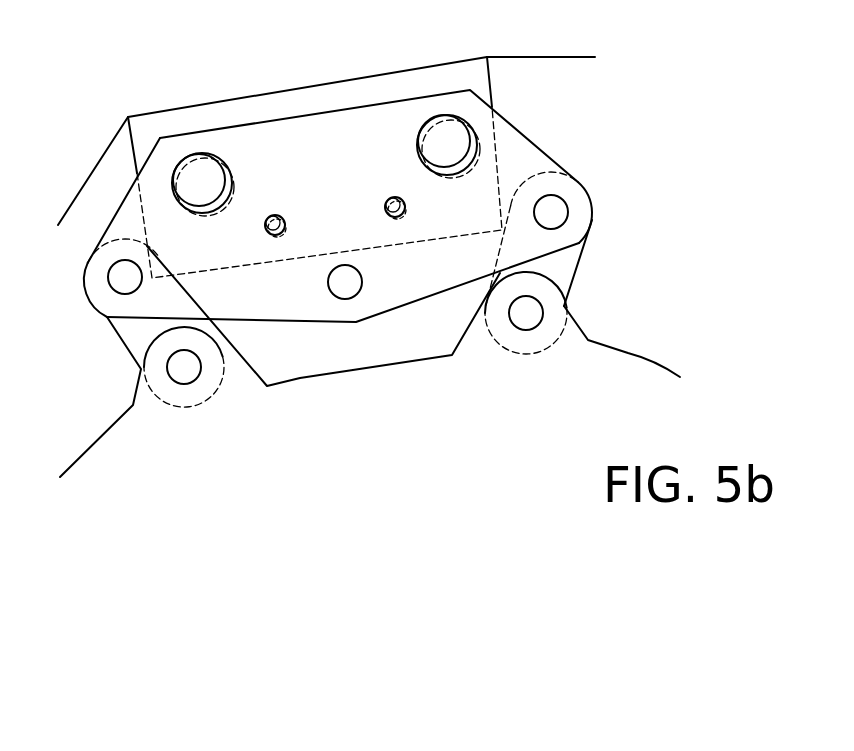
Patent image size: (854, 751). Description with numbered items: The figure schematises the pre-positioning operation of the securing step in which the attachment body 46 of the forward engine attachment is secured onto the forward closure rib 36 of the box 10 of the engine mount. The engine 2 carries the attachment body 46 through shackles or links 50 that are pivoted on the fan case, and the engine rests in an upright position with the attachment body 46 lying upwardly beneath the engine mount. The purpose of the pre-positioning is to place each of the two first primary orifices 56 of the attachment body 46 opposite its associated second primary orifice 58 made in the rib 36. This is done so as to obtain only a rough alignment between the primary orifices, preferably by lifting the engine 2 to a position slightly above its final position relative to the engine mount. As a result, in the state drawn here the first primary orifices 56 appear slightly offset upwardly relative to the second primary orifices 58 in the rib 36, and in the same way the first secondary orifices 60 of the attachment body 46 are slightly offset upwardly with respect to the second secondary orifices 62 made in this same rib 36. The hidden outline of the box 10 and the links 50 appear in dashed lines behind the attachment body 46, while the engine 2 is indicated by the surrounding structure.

The engine 2 is at (634, 356).
The box 10 is at (344, 82).
The forward closure rib 36 is at (155, 118).
The attachment body 46 is at (283, 142).
The shackles/links 50 is at (126, 336).
The first primary orifices 56 is at (203, 163).
The second primary orifices 58 is at (192, 177).
The first secondary orifices 60 is at (285, 220).
The second secondary orifices 62 is at (265, 222).